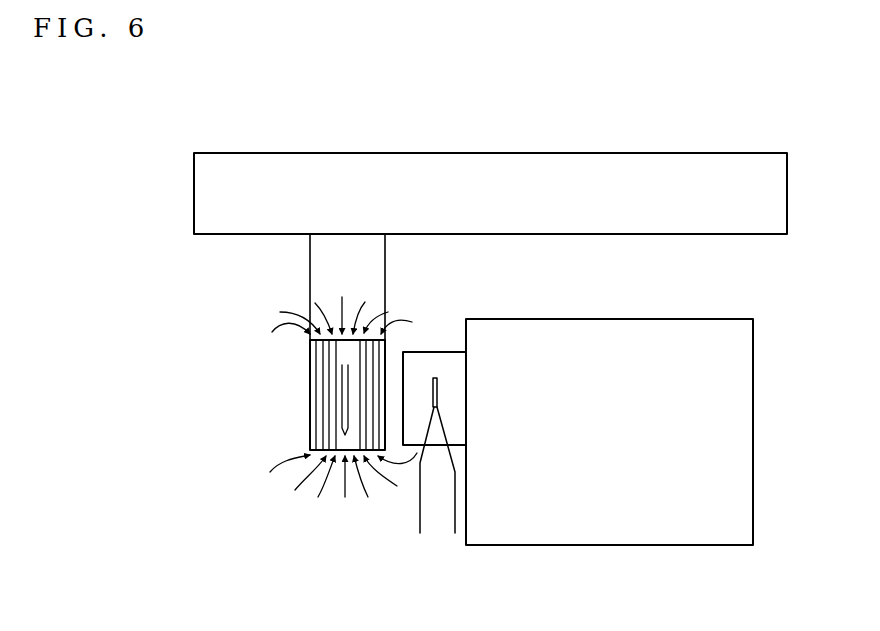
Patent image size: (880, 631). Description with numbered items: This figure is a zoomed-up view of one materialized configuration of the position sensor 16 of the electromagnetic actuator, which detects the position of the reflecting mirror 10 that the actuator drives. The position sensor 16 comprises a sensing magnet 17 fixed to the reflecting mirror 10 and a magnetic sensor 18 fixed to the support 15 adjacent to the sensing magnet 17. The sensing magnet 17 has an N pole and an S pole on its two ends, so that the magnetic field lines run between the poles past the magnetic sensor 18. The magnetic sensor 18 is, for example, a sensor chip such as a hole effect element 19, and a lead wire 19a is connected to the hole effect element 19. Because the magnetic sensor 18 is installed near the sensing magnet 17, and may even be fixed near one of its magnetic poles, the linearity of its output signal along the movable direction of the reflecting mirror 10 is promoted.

The reflecting mirror 10 is at (480, 170).
The support 15 is at (695, 327).
The position sensor 16 is at (385, 299).
The sensing magnet 17 is at (310, 382).
The magnetic sensor 18 is at (435, 352).
The hole effect element 19 is at (437, 388).
The lead wire 19a is at (421, 504).